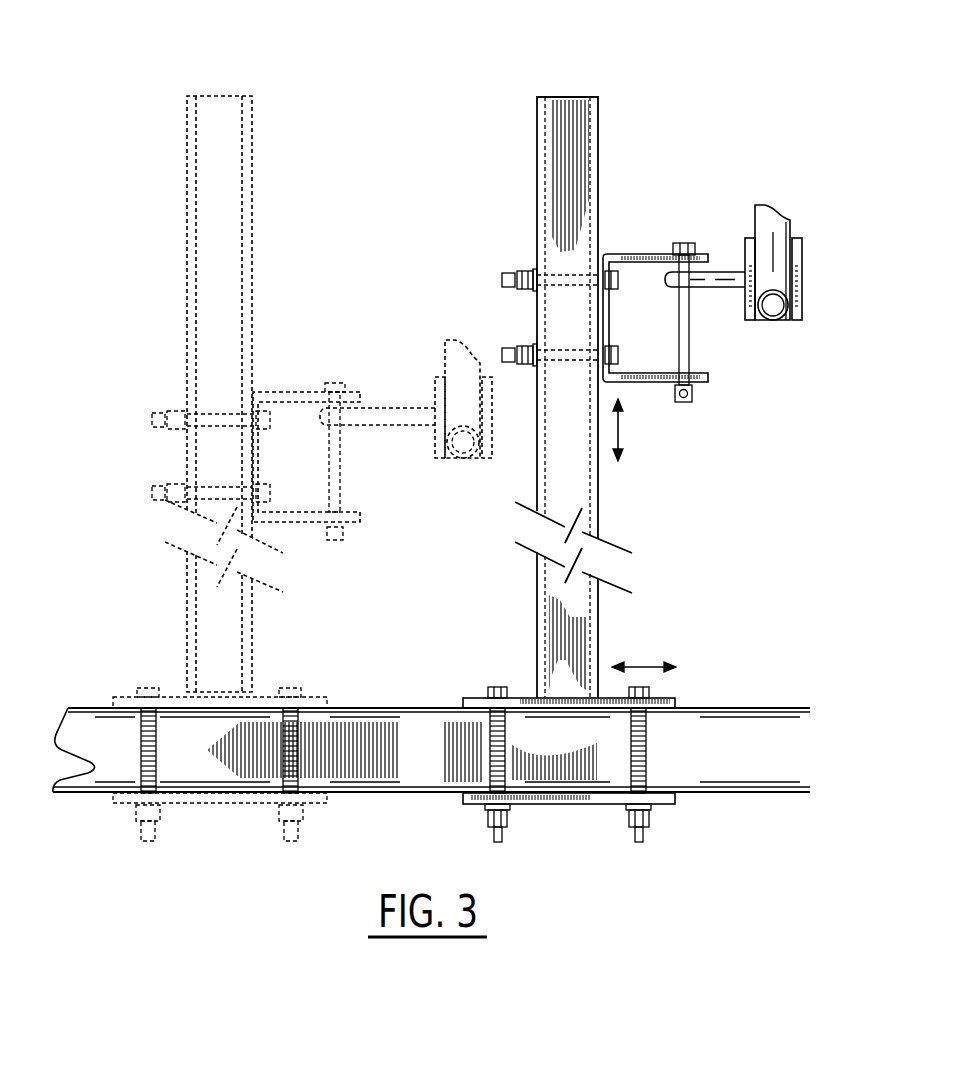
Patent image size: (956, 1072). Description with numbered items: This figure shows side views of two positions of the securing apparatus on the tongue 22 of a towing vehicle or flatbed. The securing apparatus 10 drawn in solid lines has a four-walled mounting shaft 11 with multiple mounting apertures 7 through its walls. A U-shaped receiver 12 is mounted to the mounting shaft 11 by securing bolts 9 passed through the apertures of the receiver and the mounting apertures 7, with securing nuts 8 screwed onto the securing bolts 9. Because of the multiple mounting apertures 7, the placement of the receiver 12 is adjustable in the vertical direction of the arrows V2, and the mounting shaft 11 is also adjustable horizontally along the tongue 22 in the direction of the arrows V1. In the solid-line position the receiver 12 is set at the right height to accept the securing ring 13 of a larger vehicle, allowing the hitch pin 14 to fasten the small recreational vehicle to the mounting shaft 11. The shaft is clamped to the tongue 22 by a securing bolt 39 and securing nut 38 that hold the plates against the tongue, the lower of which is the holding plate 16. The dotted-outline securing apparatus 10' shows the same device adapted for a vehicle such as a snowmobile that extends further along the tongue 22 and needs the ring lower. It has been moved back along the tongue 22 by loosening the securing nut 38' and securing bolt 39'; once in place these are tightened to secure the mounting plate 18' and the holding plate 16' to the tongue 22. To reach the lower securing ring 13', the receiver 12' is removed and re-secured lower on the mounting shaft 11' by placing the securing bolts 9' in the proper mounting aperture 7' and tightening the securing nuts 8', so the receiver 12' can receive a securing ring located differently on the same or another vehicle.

The securing apparatus 10 is at (627, 351).
The securing apparatus 10' is at (275, 364).
The mounting apertures 7 is at (569, 316).
The mounting aperture 7' is at (219, 344).
The securing nuts 8 is at (539, 317).
The securing nuts 8' is at (183, 456).
The securing bolts 9 is at (626, 317).
The securing bolts 9' is at (281, 456).
The mounting shaft 11 is at (585, 586).
The mounting shaft 11' is at (253, 623).
The receiver 12 is at (655, 280).
The receiver 12' is at (306, 436).
The securing ring 13 is at (733, 235).
The securing ring 13' is at (406, 381).
The hitch pin 14 is at (693, 393).
The holding plate 16 is at (569, 839).
The holding plate 16' is at (221, 841).
The mounting plate 18' is at (436, 678).
The tongue 22 is at (722, 750).
The securing nut 38 is at (552, 797).
The securing nut 38' is at (201, 796).
The securing bolt 39 is at (551, 665).
The securing bolt 39' is at (192, 665).
The horizontal direction arrows V1 is at (642, 663).
The vertical direction arrows V2 is at (618, 425).